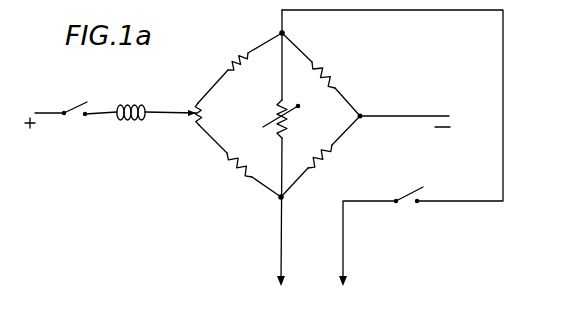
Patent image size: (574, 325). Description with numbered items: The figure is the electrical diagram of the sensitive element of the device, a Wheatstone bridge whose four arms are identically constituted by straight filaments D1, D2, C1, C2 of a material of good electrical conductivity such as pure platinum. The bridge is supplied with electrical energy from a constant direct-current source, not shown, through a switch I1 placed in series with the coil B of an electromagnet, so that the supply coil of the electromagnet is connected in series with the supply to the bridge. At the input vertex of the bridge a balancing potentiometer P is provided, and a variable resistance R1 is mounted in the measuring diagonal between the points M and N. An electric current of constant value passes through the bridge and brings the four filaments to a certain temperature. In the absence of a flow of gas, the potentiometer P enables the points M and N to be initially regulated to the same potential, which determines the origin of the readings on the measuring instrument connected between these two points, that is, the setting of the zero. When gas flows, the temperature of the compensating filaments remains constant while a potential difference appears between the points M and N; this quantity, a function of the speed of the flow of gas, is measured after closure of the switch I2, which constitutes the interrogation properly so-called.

The switch I1 is at (69, 125).
The coil of an electromagnet B is at (131, 100).
The balancing potentiometer P is at (187, 127).
The straight filament C1 is at (233, 57).
The straight filament D1 is at (334, 75).
The straight filament D2 is at (227, 173).
The straight filament C2 is at (329, 165).
The variable resistance R1 is at (273, 117).
The point M is at (293, 27).
The point N is at (290, 206).
The switch I2 is at (408, 214).